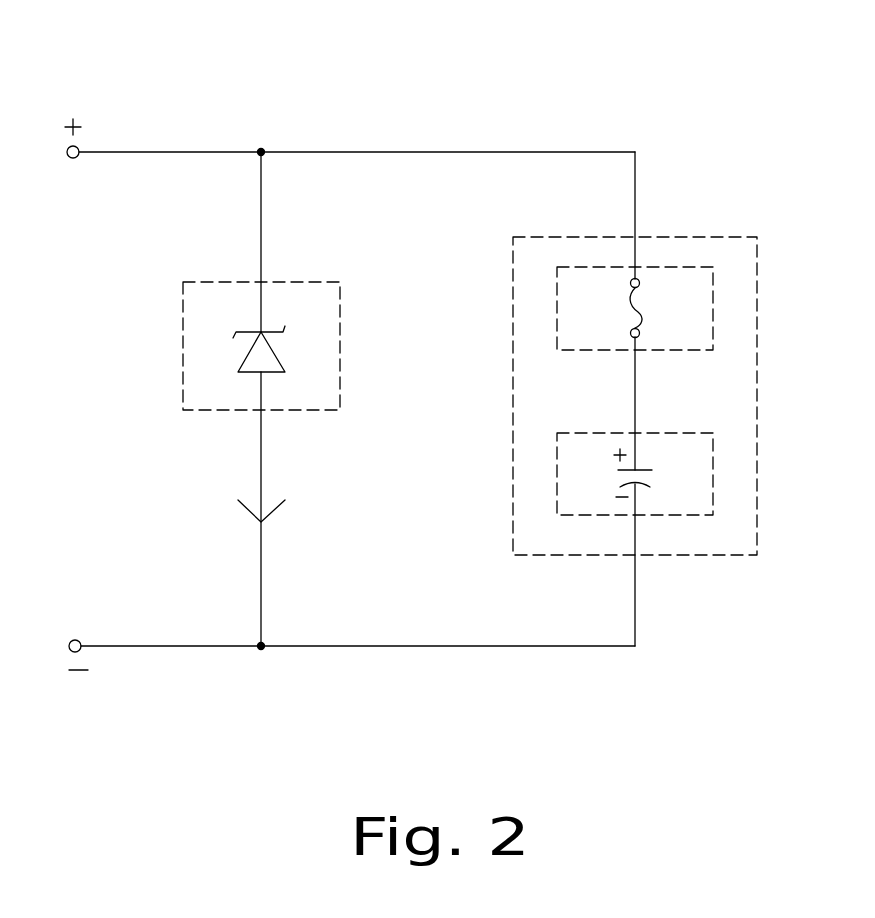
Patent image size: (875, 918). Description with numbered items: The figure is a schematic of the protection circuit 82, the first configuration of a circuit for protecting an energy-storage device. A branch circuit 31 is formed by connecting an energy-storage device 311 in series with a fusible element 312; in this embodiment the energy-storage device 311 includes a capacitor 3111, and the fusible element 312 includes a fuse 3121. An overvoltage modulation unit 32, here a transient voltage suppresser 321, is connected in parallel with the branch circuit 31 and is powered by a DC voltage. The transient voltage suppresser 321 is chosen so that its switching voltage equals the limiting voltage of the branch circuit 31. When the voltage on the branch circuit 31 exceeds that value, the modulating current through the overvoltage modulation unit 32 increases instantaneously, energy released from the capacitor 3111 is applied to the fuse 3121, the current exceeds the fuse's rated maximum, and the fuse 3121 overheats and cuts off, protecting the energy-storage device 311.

The protection circuit 82 is at (538, 52).
The branch circuit 31 is at (680, 237).
The energy-storage device 311 is at (713, 458).
The capacitor 3111 is at (650, 478).
The fusible element 312 is at (713, 292).
The fuse 3121 is at (642, 318).
The overvoltage modulation unit 32 is at (182, 332).
The transient voltage suppresser 321 is at (276, 316).